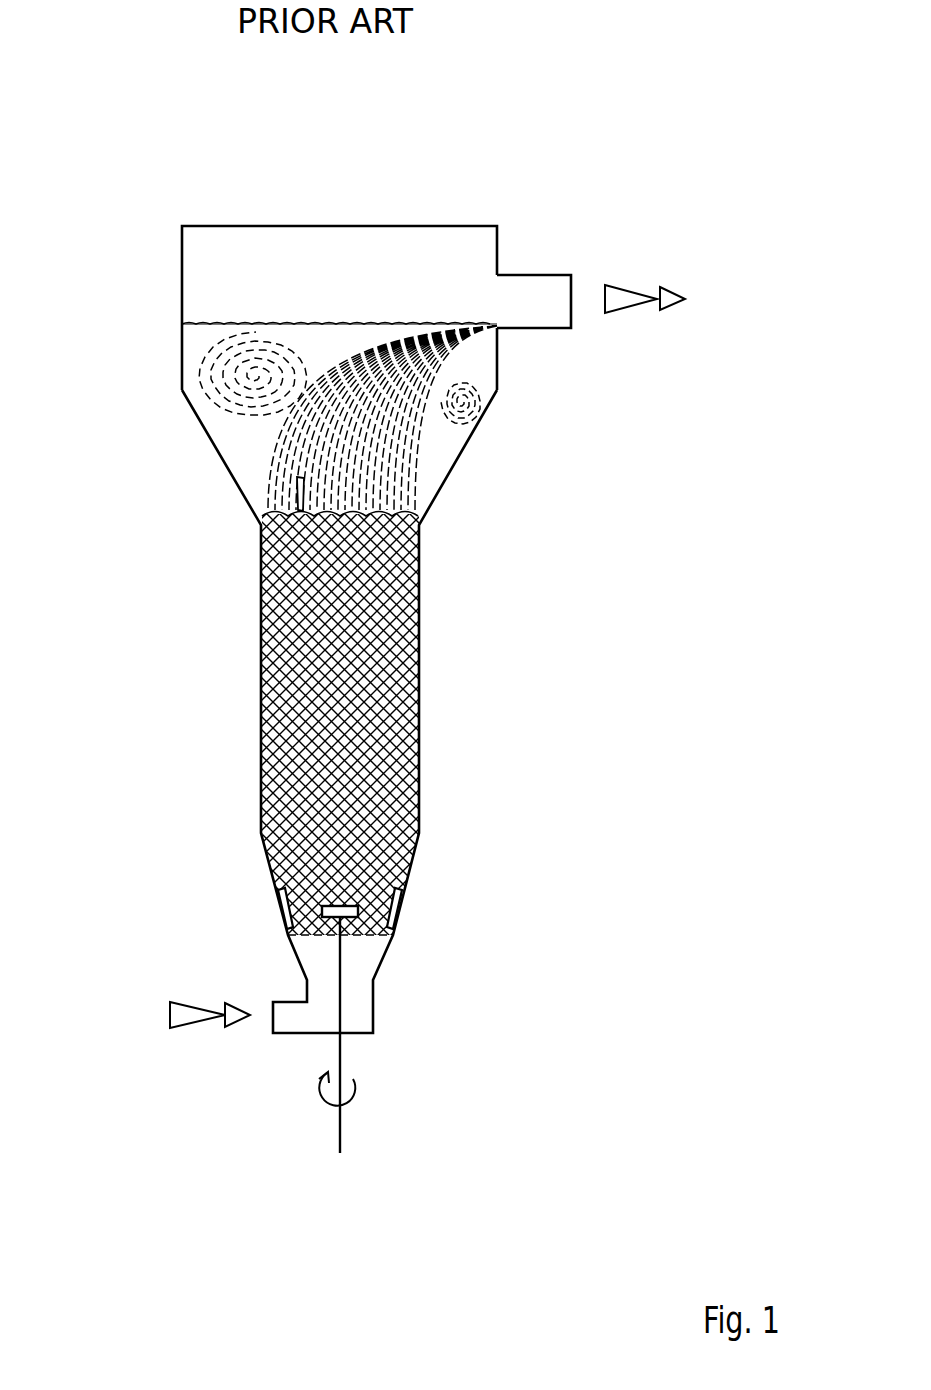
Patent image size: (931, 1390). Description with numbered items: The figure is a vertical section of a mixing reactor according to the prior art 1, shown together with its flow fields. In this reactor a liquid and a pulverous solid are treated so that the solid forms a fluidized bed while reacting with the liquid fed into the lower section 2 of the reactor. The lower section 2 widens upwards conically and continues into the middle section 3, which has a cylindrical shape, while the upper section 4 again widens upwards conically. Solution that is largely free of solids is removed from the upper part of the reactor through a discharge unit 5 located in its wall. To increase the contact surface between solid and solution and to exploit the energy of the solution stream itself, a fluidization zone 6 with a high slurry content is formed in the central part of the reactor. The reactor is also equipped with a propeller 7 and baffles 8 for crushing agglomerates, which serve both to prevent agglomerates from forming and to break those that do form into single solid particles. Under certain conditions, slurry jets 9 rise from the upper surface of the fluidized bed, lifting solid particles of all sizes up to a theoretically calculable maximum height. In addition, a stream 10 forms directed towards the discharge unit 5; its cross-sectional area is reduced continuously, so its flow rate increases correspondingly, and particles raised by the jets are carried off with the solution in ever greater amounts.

The mixing reactor according to the prior art 1 is at (152, 665).
The lower section 2 is at (383, 963).
The middle section 3 is at (420, 700).
The upper section 4 is at (478, 422).
The discharge unit 5 is at (526, 283).
The fluidization zone 6 is at (377, 773).
The propeller 7 is at (340, 903).
The baffles 8 is at (403, 907).
The slurry jets 9 is at (305, 488).
The stream 10 is at (440, 352).